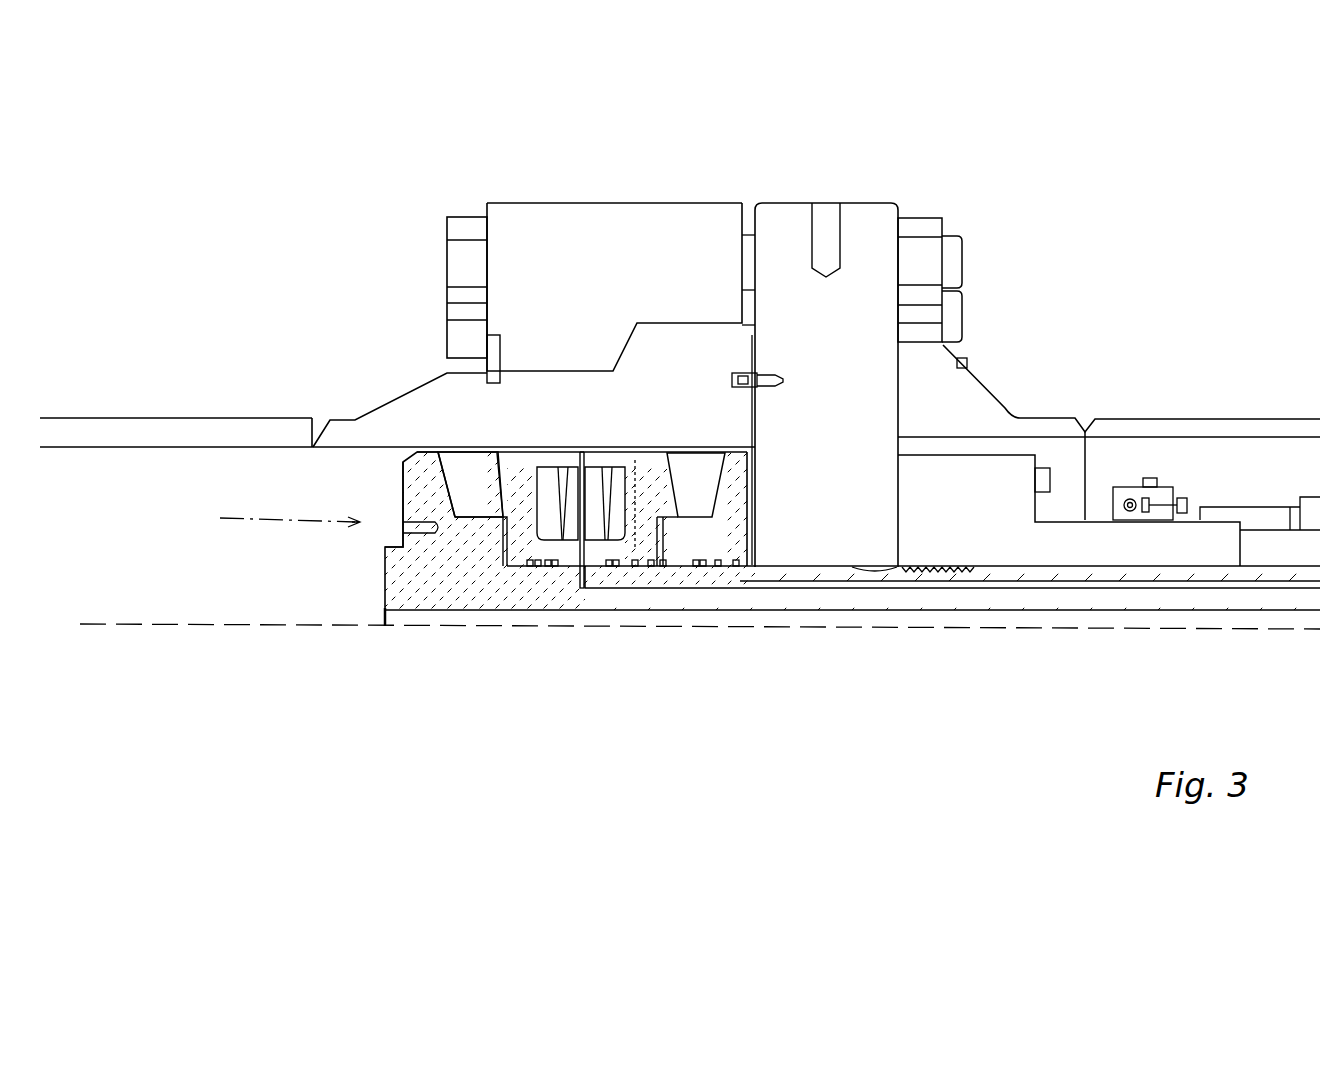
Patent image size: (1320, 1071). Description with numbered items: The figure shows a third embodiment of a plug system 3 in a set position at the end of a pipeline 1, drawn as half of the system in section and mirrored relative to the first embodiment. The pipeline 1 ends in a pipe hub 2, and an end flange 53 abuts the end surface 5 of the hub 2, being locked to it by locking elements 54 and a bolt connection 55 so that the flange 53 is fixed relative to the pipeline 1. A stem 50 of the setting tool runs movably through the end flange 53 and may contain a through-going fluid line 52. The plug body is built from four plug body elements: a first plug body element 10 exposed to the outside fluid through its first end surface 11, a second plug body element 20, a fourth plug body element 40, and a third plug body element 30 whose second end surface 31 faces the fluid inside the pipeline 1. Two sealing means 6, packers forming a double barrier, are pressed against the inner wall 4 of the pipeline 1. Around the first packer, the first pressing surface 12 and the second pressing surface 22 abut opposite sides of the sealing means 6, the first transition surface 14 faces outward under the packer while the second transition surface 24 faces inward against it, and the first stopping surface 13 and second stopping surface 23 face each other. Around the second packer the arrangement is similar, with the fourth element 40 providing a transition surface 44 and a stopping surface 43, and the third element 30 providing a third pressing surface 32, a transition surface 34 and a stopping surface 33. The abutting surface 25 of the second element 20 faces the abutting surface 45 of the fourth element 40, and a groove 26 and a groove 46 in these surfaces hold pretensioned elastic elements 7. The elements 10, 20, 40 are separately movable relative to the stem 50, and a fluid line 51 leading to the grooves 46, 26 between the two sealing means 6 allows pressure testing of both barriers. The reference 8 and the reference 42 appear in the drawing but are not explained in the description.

The pipeline 1 is at (278, 428).
The pipe hub 2 is at (683, 368).
The plug system 3 is at (280, 520).
The inner wall 4 is at (210, 446).
The end surface 5 is at (757, 335).
The sealing means 6 is at (458, 472).
The elastic element 7 is at (550, 477).
The support plate 8 is at (1063, 387).
The first plug body element 10 is at (725, 560).
The first end surface 11 is at (745, 510).
The first pressing surface 12 is at (743, 480).
The first stopping surface 13 is at (660, 545).
The first transition surface 14 is at (645, 480).
The second plug body element 20 is at (610, 560).
The second pressing surface 22 is at (580, 573).
The second stopping surface 23 is at (653, 560).
The second transition surface 24 is at (633, 560).
The abutting surface 25 is at (580, 560).
The groove 26 is at (585, 575).
The third plug body element 30 is at (428, 492).
The second end surface 31 is at (382, 590).
The third pressing surface 32 is at (435, 465).
The stopping surface 33 is at (495, 530).
The transition surface 34 is at (467, 520).
The fourth plug body element 40 is at (448, 233).
The clamping lip 42 is at (516, 474).
The stopping surface 43 is at (510, 545).
The transition surface 44 is at (493, 490).
The abutting surface 45 is at (563, 577).
The groove 46 is at (494, 383).
The stem 50 is at (1043, 595).
The fluid line 51 is at (977, 583).
The fluid line 52 is at (955, 618).
The end flange 53 is at (873, 265).
The locking elements 54 is at (685, 230).
The bolt connection 55 is at (952, 262).